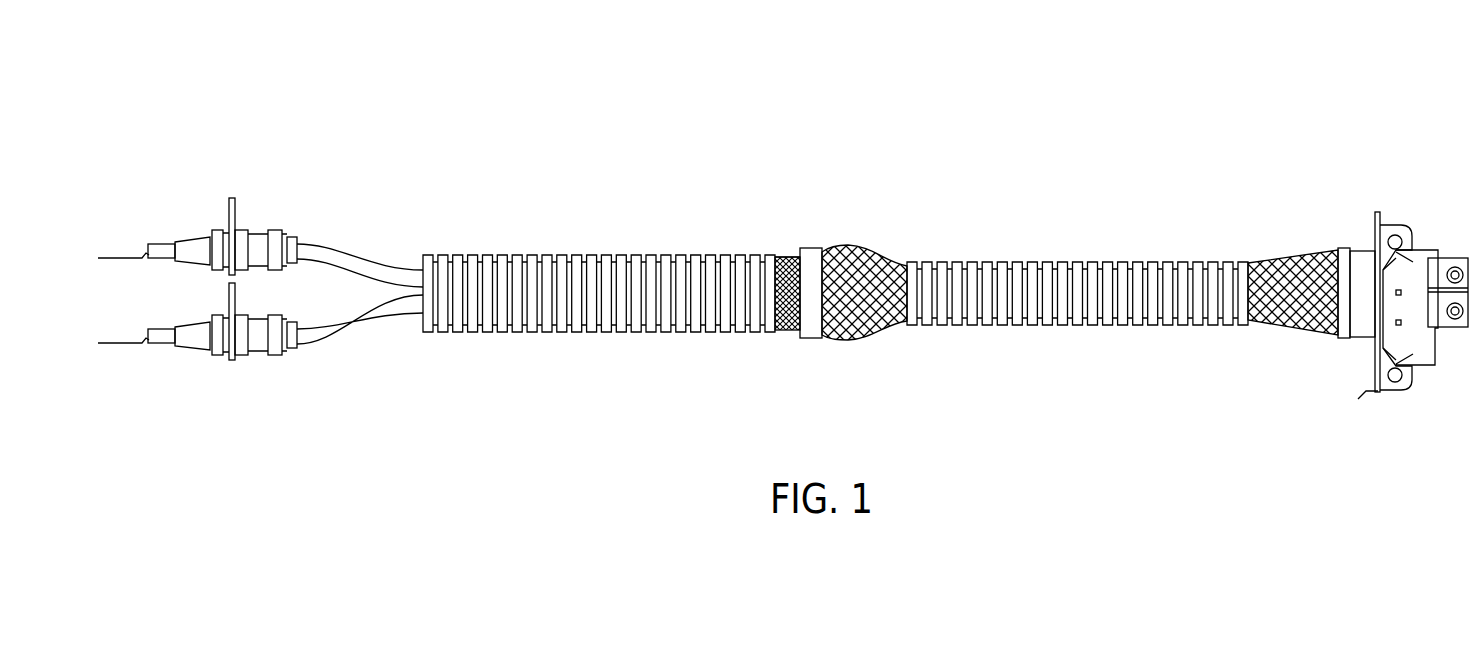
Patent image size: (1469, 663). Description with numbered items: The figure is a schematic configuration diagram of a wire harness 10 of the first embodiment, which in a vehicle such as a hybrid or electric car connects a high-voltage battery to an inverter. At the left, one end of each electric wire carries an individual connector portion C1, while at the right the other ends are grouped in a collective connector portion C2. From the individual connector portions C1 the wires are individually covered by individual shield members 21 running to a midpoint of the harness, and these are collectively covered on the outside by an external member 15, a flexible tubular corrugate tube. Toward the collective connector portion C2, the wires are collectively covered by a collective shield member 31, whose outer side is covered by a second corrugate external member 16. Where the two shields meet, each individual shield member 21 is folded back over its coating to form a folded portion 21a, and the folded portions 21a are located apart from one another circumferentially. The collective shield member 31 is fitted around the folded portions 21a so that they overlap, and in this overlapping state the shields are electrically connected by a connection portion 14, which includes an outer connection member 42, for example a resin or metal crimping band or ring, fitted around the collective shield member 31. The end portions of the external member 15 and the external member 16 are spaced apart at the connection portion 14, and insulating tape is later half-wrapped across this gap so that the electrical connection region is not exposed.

The wire harness 10 is at (1257, 86).
The individual connector portion C1 is at (193, 237).
The collective connector portion C2 is at (1417, 248).
The external member 15 is at (576, 255).
The external member 16 is at (1075, 262).
The connection portion 14 is at (830, 218).
The individual shield member 21 is at (787, 333).
The folded portion 21a is at (787, 255).
The outer connection member 42 is at (810, 338).
The collective shield member 31 is at (887, 326).